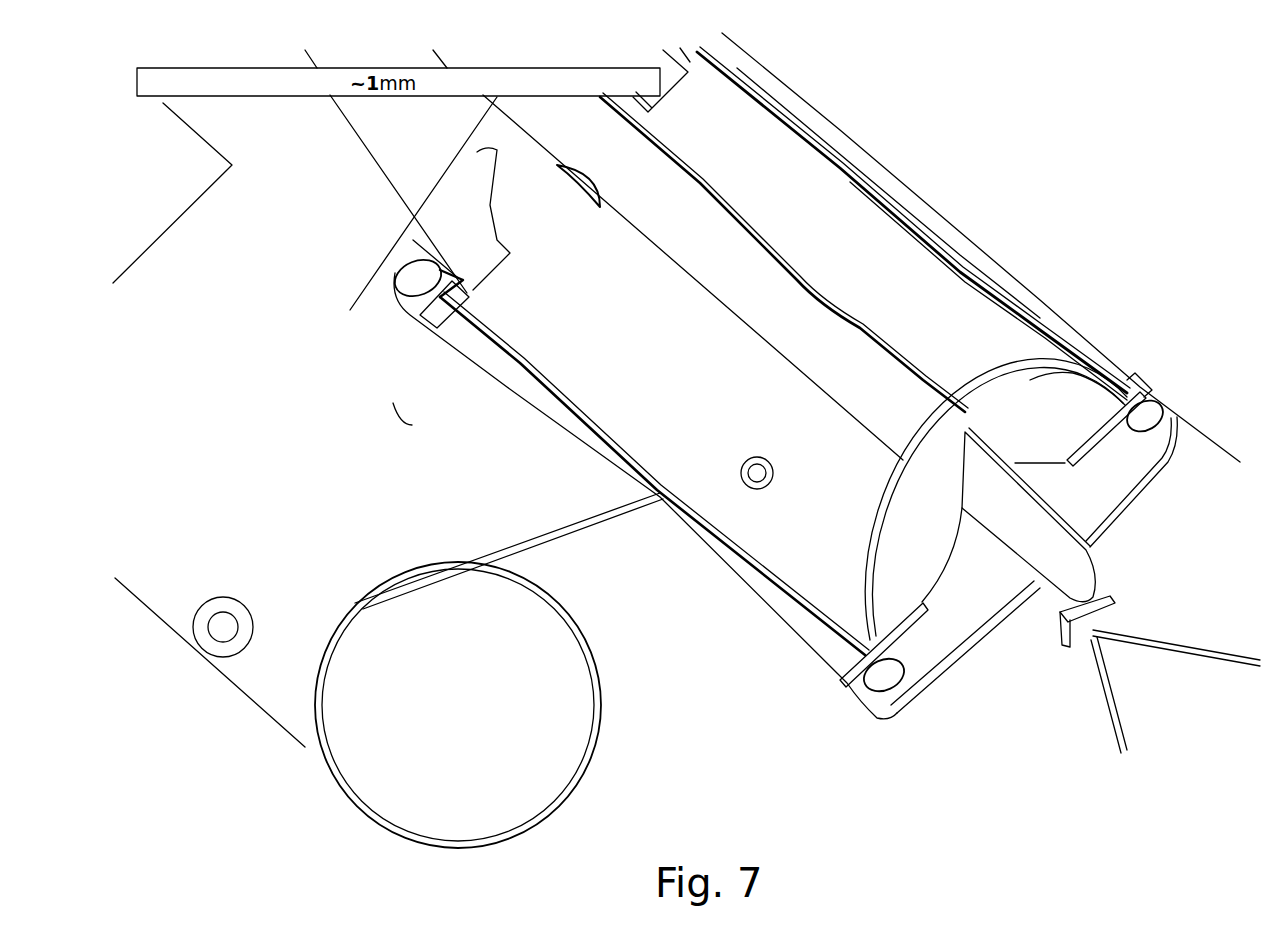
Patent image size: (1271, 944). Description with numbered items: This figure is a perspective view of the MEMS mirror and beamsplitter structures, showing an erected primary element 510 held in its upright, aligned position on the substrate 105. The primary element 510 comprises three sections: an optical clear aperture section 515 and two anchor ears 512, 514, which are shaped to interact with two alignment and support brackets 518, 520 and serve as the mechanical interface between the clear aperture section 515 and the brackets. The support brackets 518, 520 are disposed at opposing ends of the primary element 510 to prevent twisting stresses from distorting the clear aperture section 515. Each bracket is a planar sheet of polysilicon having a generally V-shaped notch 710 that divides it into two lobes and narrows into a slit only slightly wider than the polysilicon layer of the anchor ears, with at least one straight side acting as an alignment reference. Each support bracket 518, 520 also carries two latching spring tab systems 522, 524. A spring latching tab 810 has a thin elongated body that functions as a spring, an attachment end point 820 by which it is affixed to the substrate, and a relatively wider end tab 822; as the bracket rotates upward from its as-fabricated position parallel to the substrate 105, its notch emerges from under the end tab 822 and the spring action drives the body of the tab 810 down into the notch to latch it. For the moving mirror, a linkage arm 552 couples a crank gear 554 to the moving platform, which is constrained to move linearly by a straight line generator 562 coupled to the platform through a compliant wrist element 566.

The substrate 105 is at (398, 415).
The primary element 510 is at (772, 196).
The anchor ear 512 is at (350, 312).
The anchor ear 514 is at (1062, 506).
The optical clear aperture section 515 is at (693, 240).
The alignment and support bracket 518 is at (393, 155).
The alignment and support bracket 520 is at (1080, 370).
The latching spring tabs system 522 is at (787, 593).
The latching spring tabs system 524 is at (730, 73).
The linkage arm 552 is at (572, 528).
The crank gear 554 is at (600, 673).
The straight line generator 562 is at (1137, 637).
The compliant wrist element 566 is at (1068, 655).
The V-shaped notch 710 is at (460, 95).
The spring latching tab 810 is at (820, 627).
The attachment end point 820 is at (660, 492).
The end tab 822 is at (887, 700).